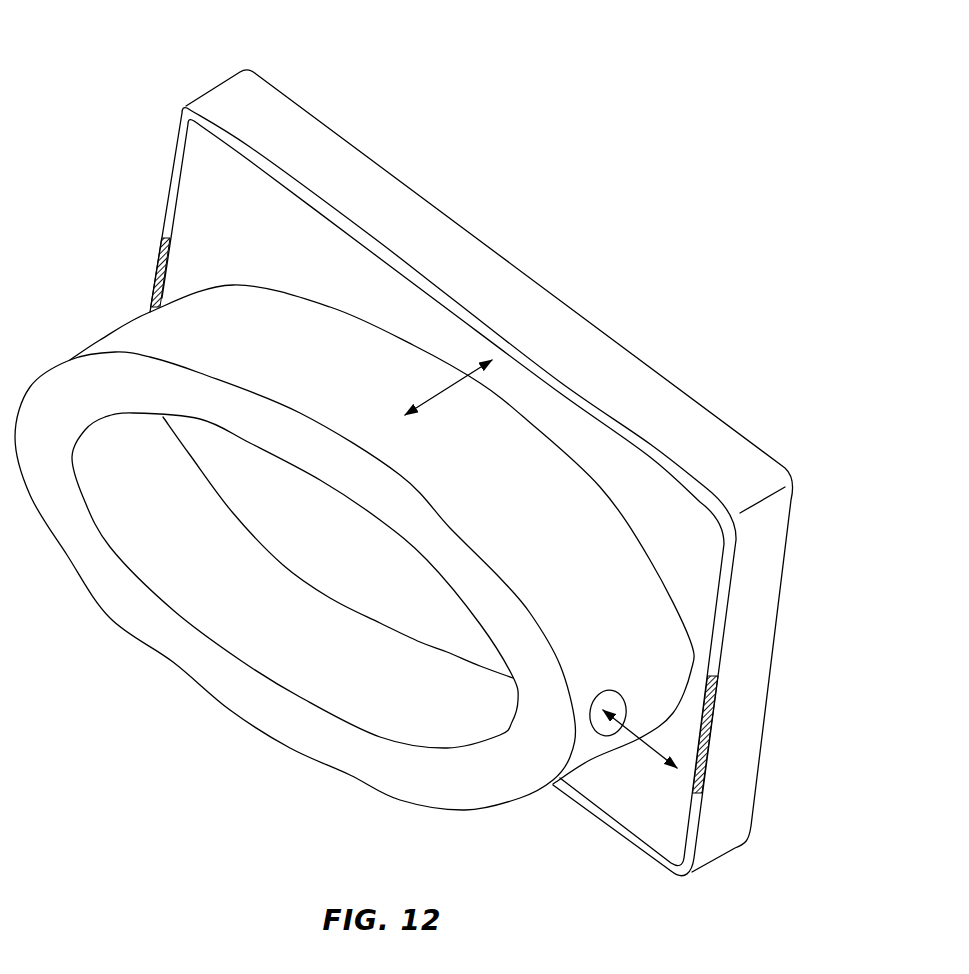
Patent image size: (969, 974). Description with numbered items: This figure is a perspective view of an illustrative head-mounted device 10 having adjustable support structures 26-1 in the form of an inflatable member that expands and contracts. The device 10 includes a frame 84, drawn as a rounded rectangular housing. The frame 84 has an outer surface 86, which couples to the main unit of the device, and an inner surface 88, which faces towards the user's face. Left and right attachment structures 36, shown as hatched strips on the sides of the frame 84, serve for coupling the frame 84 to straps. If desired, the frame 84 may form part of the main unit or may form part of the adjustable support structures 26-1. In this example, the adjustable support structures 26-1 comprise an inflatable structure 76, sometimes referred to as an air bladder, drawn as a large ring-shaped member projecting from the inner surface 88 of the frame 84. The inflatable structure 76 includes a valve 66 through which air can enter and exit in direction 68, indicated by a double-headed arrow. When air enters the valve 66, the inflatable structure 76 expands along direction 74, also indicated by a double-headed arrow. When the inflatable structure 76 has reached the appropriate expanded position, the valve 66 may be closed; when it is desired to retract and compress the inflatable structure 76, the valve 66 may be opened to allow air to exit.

The head-mounted device 10 is at (446, 458).
The adjustable support structures 26-1 is at (354, 547).
The attachment structures 36 is at (151, 266).
The valve 66 is at (603, 733).
The direction 68 is at (647, 745).
The direction 74 is at (445, 380).
The inflatable structure 76 is at (223, 612).
The frame 84 is at (530, 307).
The outer surface 86 is at (685, 392).
The inner surface 88 is at (674, 470).